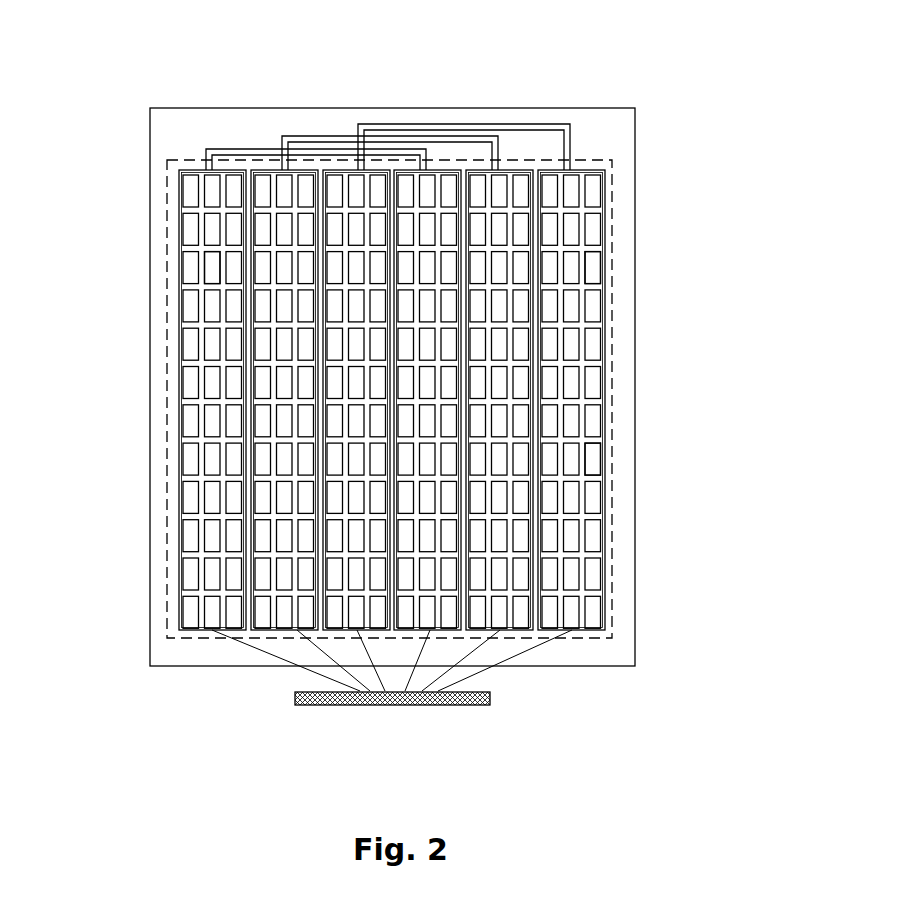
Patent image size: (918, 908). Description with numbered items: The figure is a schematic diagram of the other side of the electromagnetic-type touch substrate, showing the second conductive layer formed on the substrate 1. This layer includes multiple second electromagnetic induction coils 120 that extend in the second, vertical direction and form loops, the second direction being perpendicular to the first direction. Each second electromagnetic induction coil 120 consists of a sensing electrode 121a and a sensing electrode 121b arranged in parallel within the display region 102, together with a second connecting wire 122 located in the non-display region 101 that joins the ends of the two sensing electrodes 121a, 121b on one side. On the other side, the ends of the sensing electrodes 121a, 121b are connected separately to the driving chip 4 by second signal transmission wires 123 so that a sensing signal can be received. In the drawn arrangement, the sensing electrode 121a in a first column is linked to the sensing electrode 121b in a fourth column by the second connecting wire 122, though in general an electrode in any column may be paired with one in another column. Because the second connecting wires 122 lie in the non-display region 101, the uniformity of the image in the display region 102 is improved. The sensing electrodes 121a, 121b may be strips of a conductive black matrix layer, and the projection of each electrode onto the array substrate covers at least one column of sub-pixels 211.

The substrate 1 is at (585, 108).
The non-display region 101 is at (622, 175).
The display region 102 is at (167, 177).
The second electromagnetic induction coil 120 is at (607, 520).
The sensing electrode 121a is at (582, 440).
The sensing electrode 121b is at (318, 320).
The sub-pixel 211 is at (603, 262).
The second connecting wire 122 is at (367, 122).
The second signal transmission wire 123 is at (353, 691).
The driving chip 4 is at (462, 705).